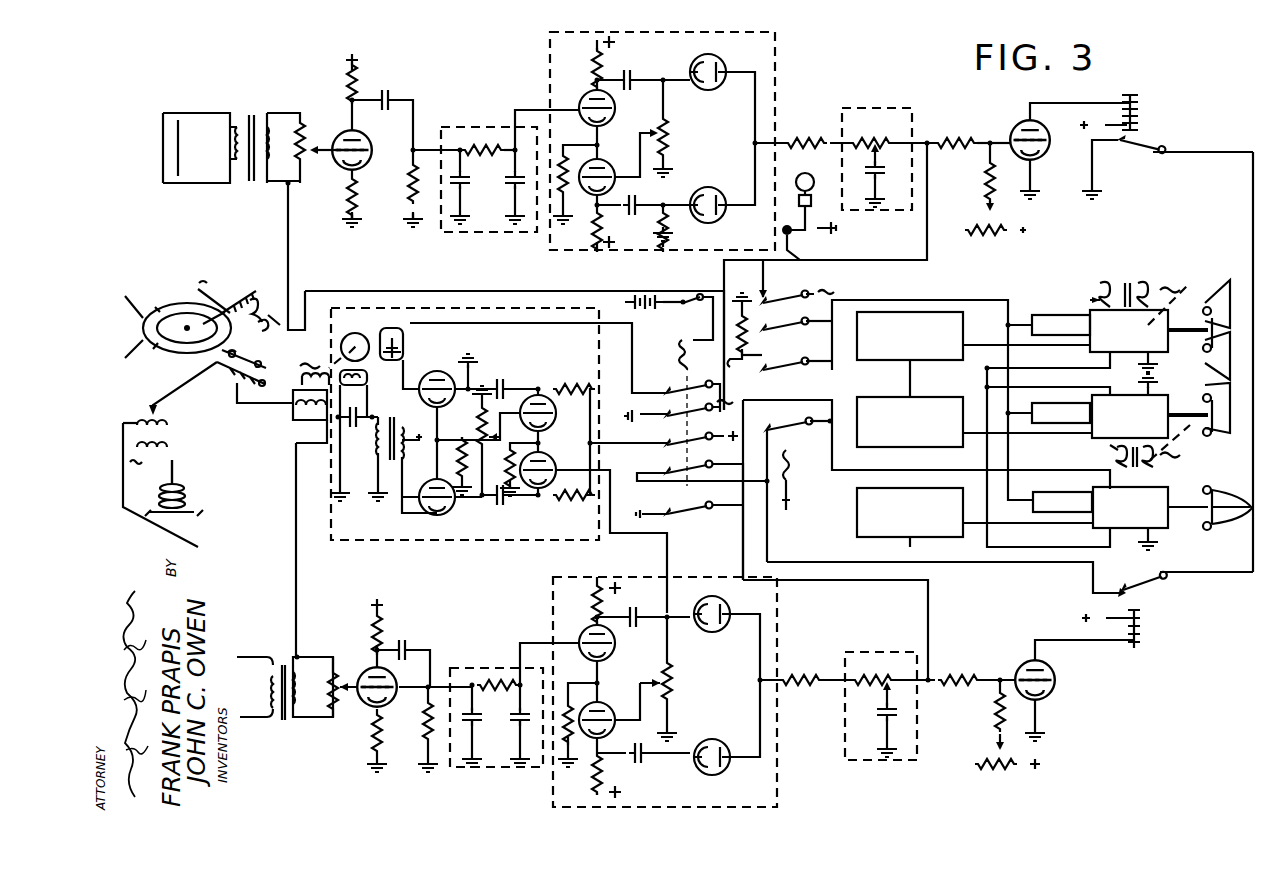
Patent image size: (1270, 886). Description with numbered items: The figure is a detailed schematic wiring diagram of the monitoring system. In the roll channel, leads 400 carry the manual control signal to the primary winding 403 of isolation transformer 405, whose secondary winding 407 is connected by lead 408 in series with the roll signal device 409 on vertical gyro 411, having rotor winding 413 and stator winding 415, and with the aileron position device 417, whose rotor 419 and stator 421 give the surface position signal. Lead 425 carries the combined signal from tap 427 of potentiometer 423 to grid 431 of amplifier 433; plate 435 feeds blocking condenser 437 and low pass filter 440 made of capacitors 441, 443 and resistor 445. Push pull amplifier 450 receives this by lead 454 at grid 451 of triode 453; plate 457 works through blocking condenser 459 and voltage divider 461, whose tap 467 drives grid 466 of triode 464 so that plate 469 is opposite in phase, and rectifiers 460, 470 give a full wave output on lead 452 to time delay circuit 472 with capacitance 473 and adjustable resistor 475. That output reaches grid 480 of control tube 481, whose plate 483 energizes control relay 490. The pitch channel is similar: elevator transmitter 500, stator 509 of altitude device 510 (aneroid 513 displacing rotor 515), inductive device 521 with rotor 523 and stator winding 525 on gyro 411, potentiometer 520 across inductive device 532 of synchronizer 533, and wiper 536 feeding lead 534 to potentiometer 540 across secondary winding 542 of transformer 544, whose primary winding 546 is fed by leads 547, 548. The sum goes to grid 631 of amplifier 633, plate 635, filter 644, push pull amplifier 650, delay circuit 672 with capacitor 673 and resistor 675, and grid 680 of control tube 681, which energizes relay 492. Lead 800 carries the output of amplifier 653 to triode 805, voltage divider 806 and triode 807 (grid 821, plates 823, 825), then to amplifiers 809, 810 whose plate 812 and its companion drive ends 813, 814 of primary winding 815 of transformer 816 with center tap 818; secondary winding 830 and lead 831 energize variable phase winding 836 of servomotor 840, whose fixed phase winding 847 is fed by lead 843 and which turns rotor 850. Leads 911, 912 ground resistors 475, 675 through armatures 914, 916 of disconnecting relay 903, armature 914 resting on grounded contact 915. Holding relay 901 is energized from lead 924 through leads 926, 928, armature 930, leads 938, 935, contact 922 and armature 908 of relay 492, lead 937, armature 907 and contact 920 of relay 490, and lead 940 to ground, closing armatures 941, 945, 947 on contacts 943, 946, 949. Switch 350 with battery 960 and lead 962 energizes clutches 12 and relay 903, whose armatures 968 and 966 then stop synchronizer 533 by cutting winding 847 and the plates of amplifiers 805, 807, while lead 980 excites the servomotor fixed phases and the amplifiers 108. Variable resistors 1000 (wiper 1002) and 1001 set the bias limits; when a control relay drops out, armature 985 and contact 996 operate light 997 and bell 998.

The leads 400 is at (196, 148).
The primary winding 403 is at (234, 158).
The isolation transformer 405 is at (233, 104).
The secondary winding 407 is at (269, 138).
The lead 408 is at (297, 261).
The roll signal developing device 409 is at (254, 294).
The vertical gyro 411 is at (173, 297).
The rotor winding 413 is at (248, 284).
The stator winding 415 is at (278, 319).
The surface position reference signal developing device 417 is at (1139, 281).
The rotor 419 is at (1168, 283).
The stator 421 is at (1105, 279).
The potentiometer 423 is at (346, 119).
The lead 425 is at (337, 154).
The tap 427 is at (328, 135).
The grid 431 is at (358, 198).
The amplifier 433 is at (415, 130).
The plate 435 is at (364, 140).
The blocking condenser 437 is at (392, 84).
The low pass filter circuit 440 is at (441, 122).
The capacitor 441 is at (470, 187).
The capacitor 443 is at (508, 184).
The resistor 445 is at (488, 160).
The push pull amplifier arrangement 450 is at (778, 72).
The grid 451 is at (575, 175).
The lead 452 is at (778, 138).
The triode 453 is at (613, 92).
The lead 454 is at (518, 110).
The plate 457 is at (583, 81).
The blocking condenser 459 is at (635, 76).
The rectifier 460 is at (723, 66).
The voltage divider 461 is at (668, 130).
The triode 464 is at (609, 170).
The grid 466 is at (643, 214).
The tap 467 is at (644, 129).
The plate 469 is at (604, 206).
The rectifier 470 is at (722, 216).
The time delay circuit 472 is at (877, 108).
The capacitance 473 is at (864, 172).
The resistor 475 is at (975, 128).
The grid 480 is at (1020, 128).
The control tube 481 is at (1006, 177).
The plate 483 is at (1050, 126).
The control relay 490 is at (1138, 120).
The control relay 492 is at (1140, 621).
The elevator surface position transmitter 500 is at (1160, 455).
The stator 509 is at (170, 426).
The altitude reference device 510 is at (192, 462).
The aneroid 513 is at (182, 490).
The rotor 515 is at (170, 449).
The potentiometer 520 is at (294, 420).
The inductive device 521 is at (246, 378).
The rotor 523 is at (262, 353).
The stator winding 525 is at (218, 369).
The inductive device 532 is at (287, 398).
The synchronizer 533 is at (440, 311).
The lead 534 is at (295, 511).
The wiper 536 is at (318, 420).
The potentiometer 540 is at (382, 662).
The secondary winding 542 is at (315, 664).
The coupling and isolation transformer 544 is at (290, 648).
The primary winding 546 is at (252, 690).
The lead 547 is at (256, 657).
The lead 548 is at (254, 720).
The grid 631 is at (363, 739).
The amplifier 633 is at (413, 729).
The plate 635 is at (432, 674).
The low pass filter circuit 644 is at (472, 664).
The push pull amplifier 650 is at (552, 594).
The amplifier 653 is at (618, 632).
The delay circuit 672 is at (877, 652).
The capacitor 673 is at (902, 706).
The resistor 675 is at (860, 692).
The grid 680 is at (1050, 687).
The control tube 681 is at (1053, 673).
The lead 800 is at (674, 536).
The triode 805 is at (543, 492).
The voltage divider 806 is at (480, 438).
The triode 807 is at (545, 394).
The amplifier 809 is at (442, 502).
The amplifier 810 is at (436, 371).
The plate 812 is at (430, 512).
The end of primary winding 813 is at (404, 457).
The end of primary winding 814 is at (402, 416).
The primary winding 815 is at (392, 487).
The transformer 816 is at (386, 402).
The center tap 818 is at (420, 444).
The grid 821 is at (609, 436).
The plate 823 is at (552, 500).
The plate 825 is at (548, 403).
The secondary winding 830 is at (375, 438).
The lead 831 is at (392, 414).
The variable phase winding 836 is at (349, 435).
The servomotor 840 is at (362, 332).
The lead 843 is at (635, 347).
The fixed phase winding 847 is at (405, 338).
The rotor 850 is at (311, 364).
The holding relay 901 is at (792, 466).
The disconnecting relay 903 is at (682, 356).
The armature 907 is at (1148, 147).
The armature 908 is at (1146, 574).
The lead 911 is at (927, 240).
The lead 912 is at (928, 607).
The armature 914 is at (714, 504).
The contact 915 is at (648, 425).
The armature 916 is at (679, 409).
The contact 920 is at (1122, 142).
The contact 922 is at (1132, 598).
The lead 924 is at (787, 490).
The lead 926 is at (832, 436).
The lead 928 is at (788, 400).
The armature 930 is at (718, 464).
The lead 935 is at (975, 562).
The lead 937 is at (1252, 206).
The lead 938 is at (734, 470).
The lead 940 is at (1092, 164).
The armature 941 is at (790, 435).
The contact 943 is at (772, 429).
The armature 945 is at (786, 367).
The contact 946 is at (753, 359).
The armature 947 is at (788, 330).
The contact 949 is at (753, 330).
The battery 960 is at (654, 298).
The lead 962 is at (905, 305).
The armature 966 is at (709, 430).
The armature 968 is at (674, 388).
The lead 980 is at (917, 375).
The armature 985 is at (813, 292).
The contact 996 is at (775, 288).
The light 997 is at (803, 246).
The bell 998 is at (796, 182).
The variable resistor 1000 is at (998, 228).
The variable resistor 1001 is at (987, 762).
The wiper 1002 is at (987, 226).
The clutches 12 is at (1070, 490).
The amplifier 108 is at (910, 542).
The switch 350 is at (690, 288).